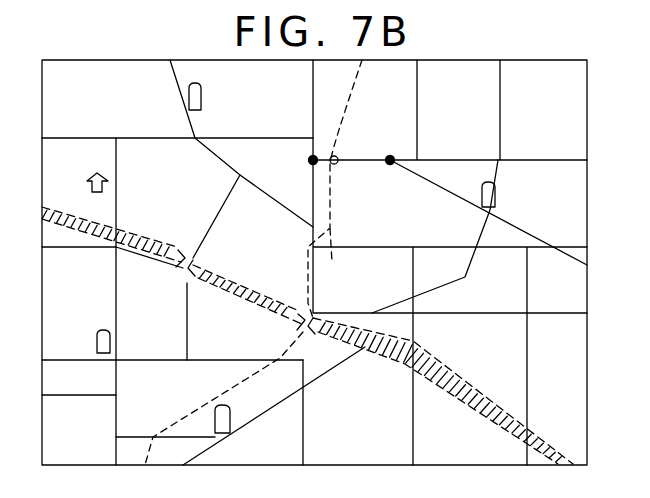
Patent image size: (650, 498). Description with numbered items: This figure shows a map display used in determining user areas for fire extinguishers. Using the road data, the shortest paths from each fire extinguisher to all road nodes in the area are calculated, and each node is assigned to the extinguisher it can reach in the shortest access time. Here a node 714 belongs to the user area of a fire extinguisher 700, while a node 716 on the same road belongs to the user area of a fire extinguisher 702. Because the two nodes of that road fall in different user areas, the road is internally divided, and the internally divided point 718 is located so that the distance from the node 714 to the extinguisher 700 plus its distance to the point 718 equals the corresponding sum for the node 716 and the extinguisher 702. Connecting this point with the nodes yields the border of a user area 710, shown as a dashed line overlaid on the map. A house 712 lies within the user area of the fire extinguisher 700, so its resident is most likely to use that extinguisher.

The fire extinguisher 700 is at (202, 84).
The fire extinguisher 702 is at (497, 192).
The user area 710 is at (332, 262).
The house 712 is at (108, 182).
The node 714 is at (313, 160).
The node 716 is at (390, 160).
The internally divided point 718 is at (336, 164).